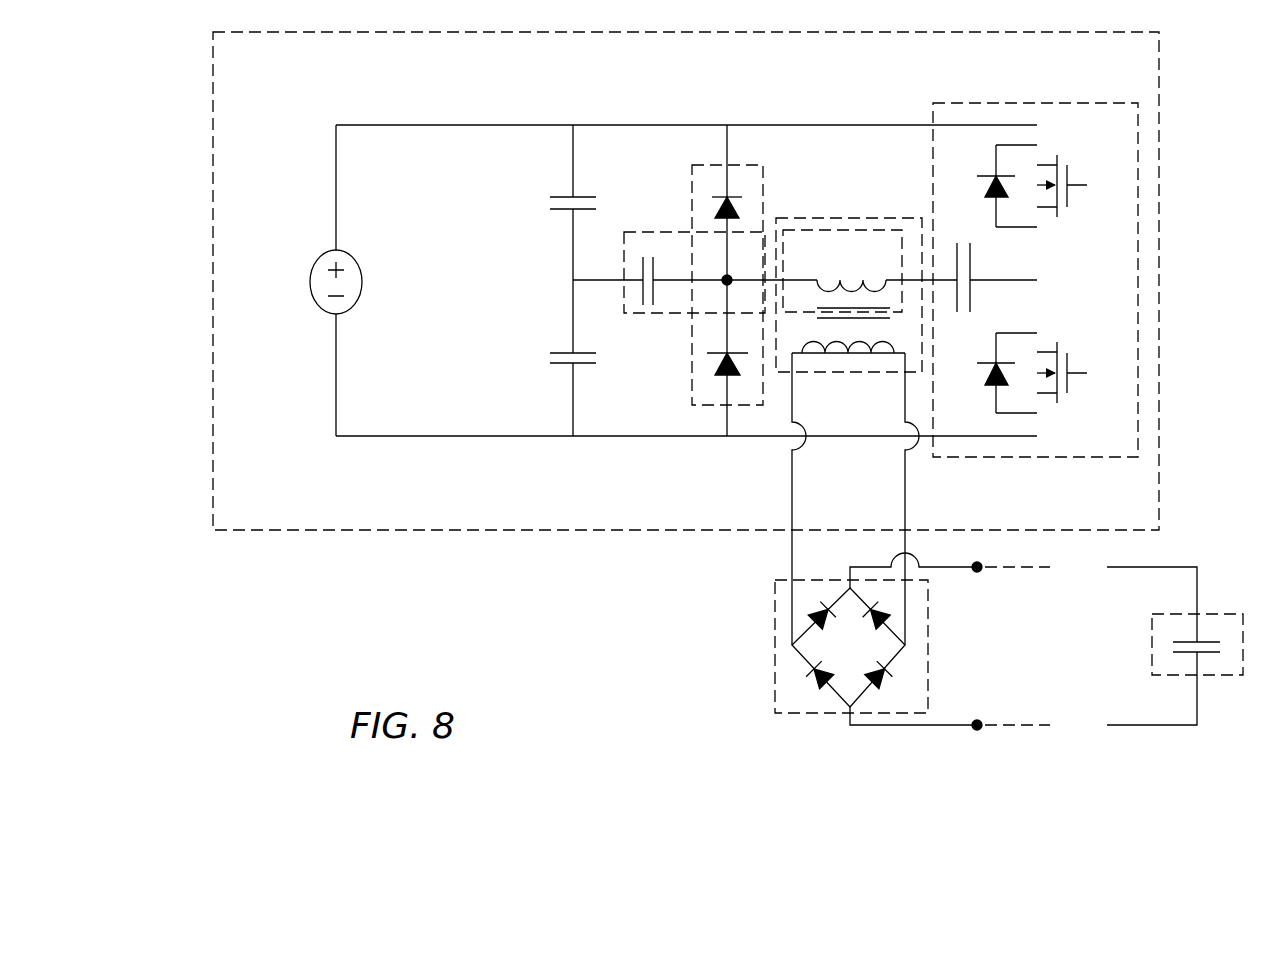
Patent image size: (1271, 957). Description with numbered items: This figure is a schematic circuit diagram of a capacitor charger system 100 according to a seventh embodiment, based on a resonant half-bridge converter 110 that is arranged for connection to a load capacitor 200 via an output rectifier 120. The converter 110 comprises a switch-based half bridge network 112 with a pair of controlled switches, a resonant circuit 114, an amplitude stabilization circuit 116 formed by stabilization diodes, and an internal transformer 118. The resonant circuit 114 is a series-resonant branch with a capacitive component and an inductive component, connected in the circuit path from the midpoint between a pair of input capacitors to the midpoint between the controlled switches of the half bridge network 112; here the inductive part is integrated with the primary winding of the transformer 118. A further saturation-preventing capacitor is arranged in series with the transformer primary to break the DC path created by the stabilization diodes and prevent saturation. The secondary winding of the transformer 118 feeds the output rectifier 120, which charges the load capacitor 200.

The capacitor charger system 100 is at (553, 653).
The resonant half-bridge converter 110 is at (1160, 98).
The switch-based half bridge network 112 is at (1028, 103).
The resonant circuit 114 is at (645, 232).
The amplitude stabilization circuit 116 is at (763, 178).
The internal transformer 118 is at (845, 218).
The output rectifier 120 is at (928, 658).
The load capacitor 200 is at (1222, 614).